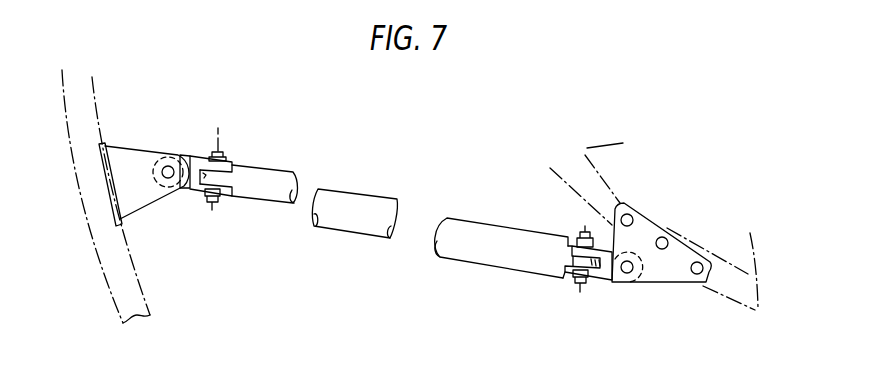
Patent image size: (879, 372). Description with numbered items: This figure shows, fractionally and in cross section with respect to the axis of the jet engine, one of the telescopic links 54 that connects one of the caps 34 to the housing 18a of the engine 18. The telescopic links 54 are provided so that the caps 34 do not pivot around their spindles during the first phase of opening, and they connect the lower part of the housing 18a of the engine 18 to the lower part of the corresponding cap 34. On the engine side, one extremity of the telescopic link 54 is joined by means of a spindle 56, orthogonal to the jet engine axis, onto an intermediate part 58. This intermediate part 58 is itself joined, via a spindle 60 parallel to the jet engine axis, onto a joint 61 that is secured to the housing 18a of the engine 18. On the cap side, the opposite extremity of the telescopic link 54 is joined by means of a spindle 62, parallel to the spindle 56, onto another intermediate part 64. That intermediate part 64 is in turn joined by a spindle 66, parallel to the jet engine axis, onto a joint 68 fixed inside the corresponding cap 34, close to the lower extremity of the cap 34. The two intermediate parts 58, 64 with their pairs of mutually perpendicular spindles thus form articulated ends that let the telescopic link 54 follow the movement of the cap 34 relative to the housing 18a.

The cap 34 is at (83, 70).
The spindle 66 is at (165, 165).
The intermediate part 64 is at (192, 158).
The joint 68 is at (131, 196).
The spindle 62 is at (212, 203).
The telescopic link 54 is at (373, 195).
The housing 18a is at (574, 153).
The engine 18 is at (712, 167).
The spindle 56 is at (585, 234).
The intermediate part 58 is at (592, 284).
The spindle 60 is at (626, 273).
The joint 61 is at (665, 275).